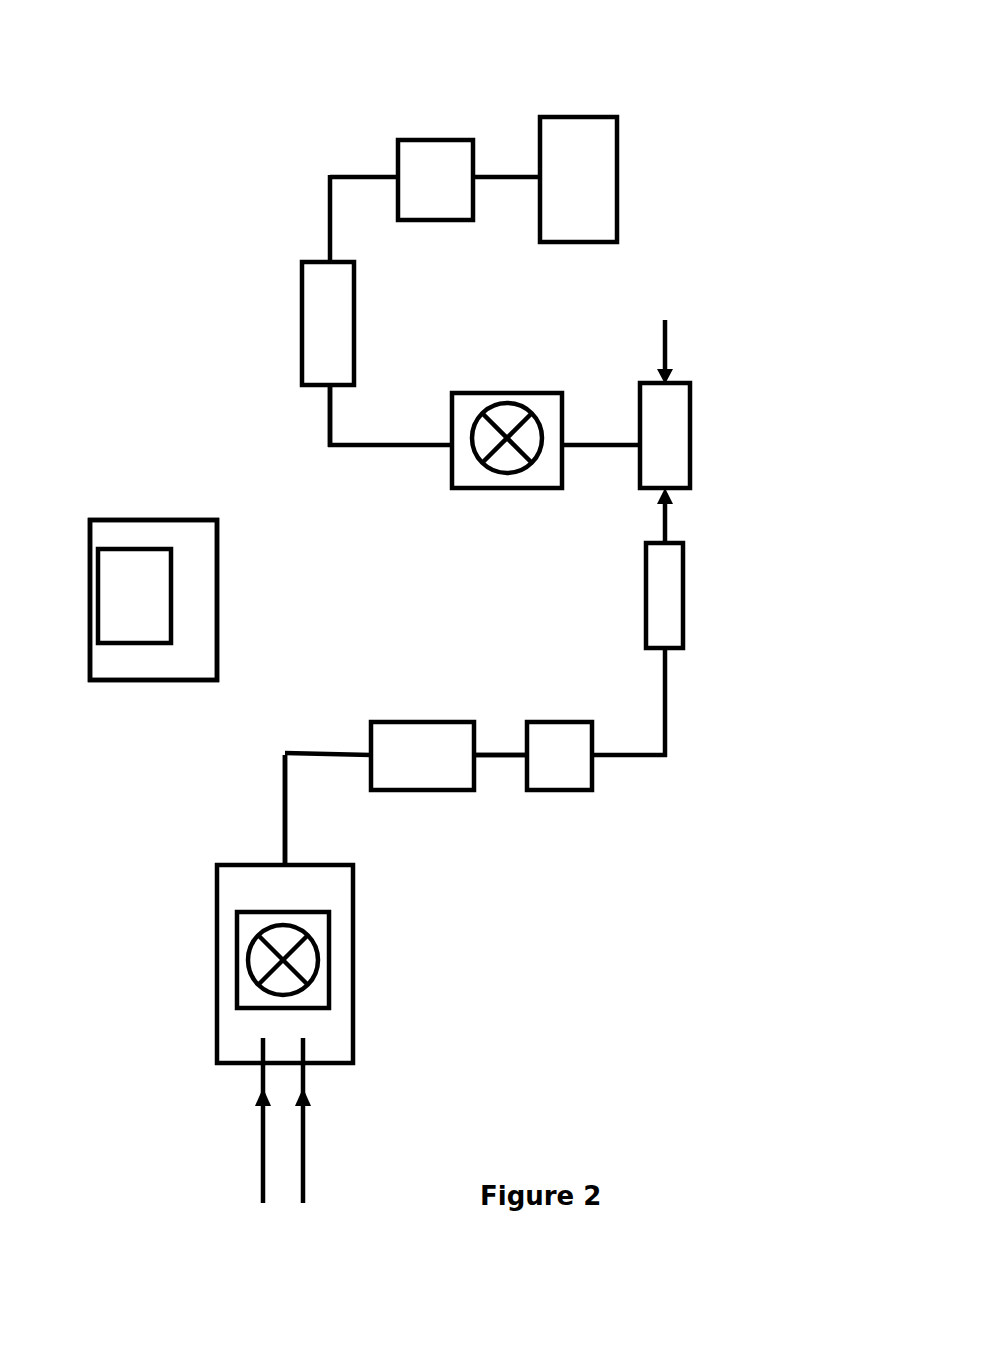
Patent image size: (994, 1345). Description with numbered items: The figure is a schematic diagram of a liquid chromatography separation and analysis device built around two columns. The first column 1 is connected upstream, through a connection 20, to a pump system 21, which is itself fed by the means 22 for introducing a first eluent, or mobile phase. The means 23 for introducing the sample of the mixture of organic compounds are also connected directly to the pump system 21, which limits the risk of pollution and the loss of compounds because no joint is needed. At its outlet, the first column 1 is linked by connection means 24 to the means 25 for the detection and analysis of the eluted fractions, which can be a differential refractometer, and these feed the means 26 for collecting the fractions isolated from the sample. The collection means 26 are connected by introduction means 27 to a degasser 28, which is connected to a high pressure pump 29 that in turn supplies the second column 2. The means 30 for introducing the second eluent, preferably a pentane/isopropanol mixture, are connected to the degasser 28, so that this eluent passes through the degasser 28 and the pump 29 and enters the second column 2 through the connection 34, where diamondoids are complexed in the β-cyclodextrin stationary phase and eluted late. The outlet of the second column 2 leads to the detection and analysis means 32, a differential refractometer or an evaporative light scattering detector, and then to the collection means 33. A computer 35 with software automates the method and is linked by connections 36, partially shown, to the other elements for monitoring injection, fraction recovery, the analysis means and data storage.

The first column 1 is at (420, 712).
The second column 2 is at (302, 300).
The connection 20 is at (282, 805).
The pump system 21 is at (356, 962).
The means for introducing a first eluent 22 is at (251, 1162).
The means for introducing the sample 23 is at (310, 1140).
The connection means 24 is at (507, 765).
The means for the detection and analysis 25 is at (555, 712).
The means for collecting the eluted fractions 26 is at (694, 606).
The introduction means 27 is at (683, 517).
The degasser 28 is at (699, 440).
The high pressure pump 29 is at (496, 382).
The means for introduction of the second eluent 30 is at (675, 328).
The means for the detection and analysis 32 is at (421, 140).
The means for collecting the eluted fractions 33 is at (587, 117).
The connection 34 is at (328, 420).
The computer 35 is at (150, 507).
The connections 36 is at (230, 548).